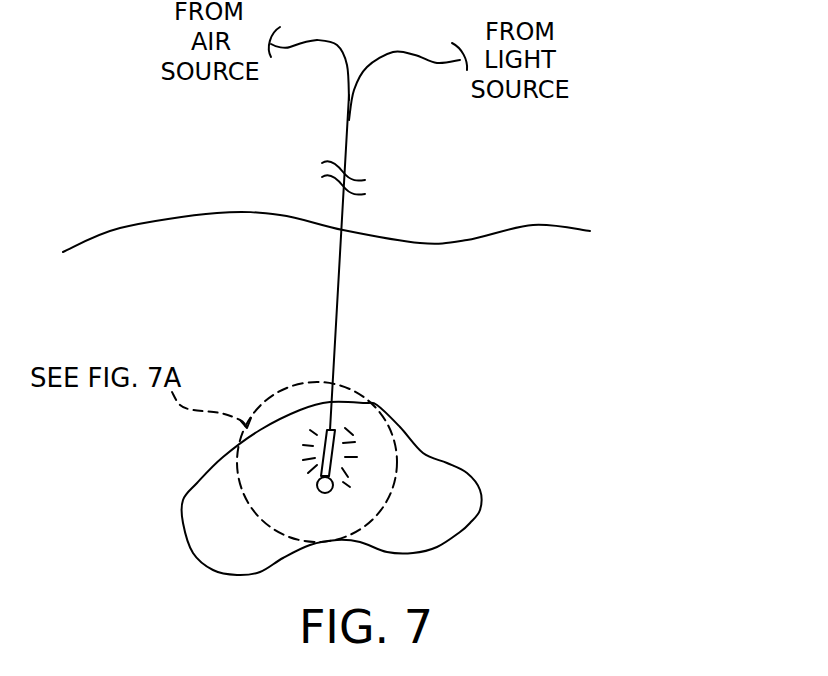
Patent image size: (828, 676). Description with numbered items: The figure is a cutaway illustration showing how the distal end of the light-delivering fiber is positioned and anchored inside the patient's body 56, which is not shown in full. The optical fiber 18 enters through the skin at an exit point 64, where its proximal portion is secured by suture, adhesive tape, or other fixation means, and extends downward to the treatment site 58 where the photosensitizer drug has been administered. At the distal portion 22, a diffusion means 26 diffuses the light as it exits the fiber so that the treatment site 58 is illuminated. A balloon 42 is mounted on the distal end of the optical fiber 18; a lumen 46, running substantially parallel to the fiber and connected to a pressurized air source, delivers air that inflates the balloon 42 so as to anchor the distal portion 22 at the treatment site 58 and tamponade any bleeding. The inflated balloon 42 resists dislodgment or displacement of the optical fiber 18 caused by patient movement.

The optical fiber 18 is at (336, 320).
The distal portion 22 is at (335, 428).
The diffusion means 26 is at (321, 457).
The balloon 42 is at (316, 492).
The lumen 46 is at (315, 42).
The patient's body 56 is at (452, 261).
The treatment site 58 is at (457, 477).
The exit point 64 is at (342, 228).